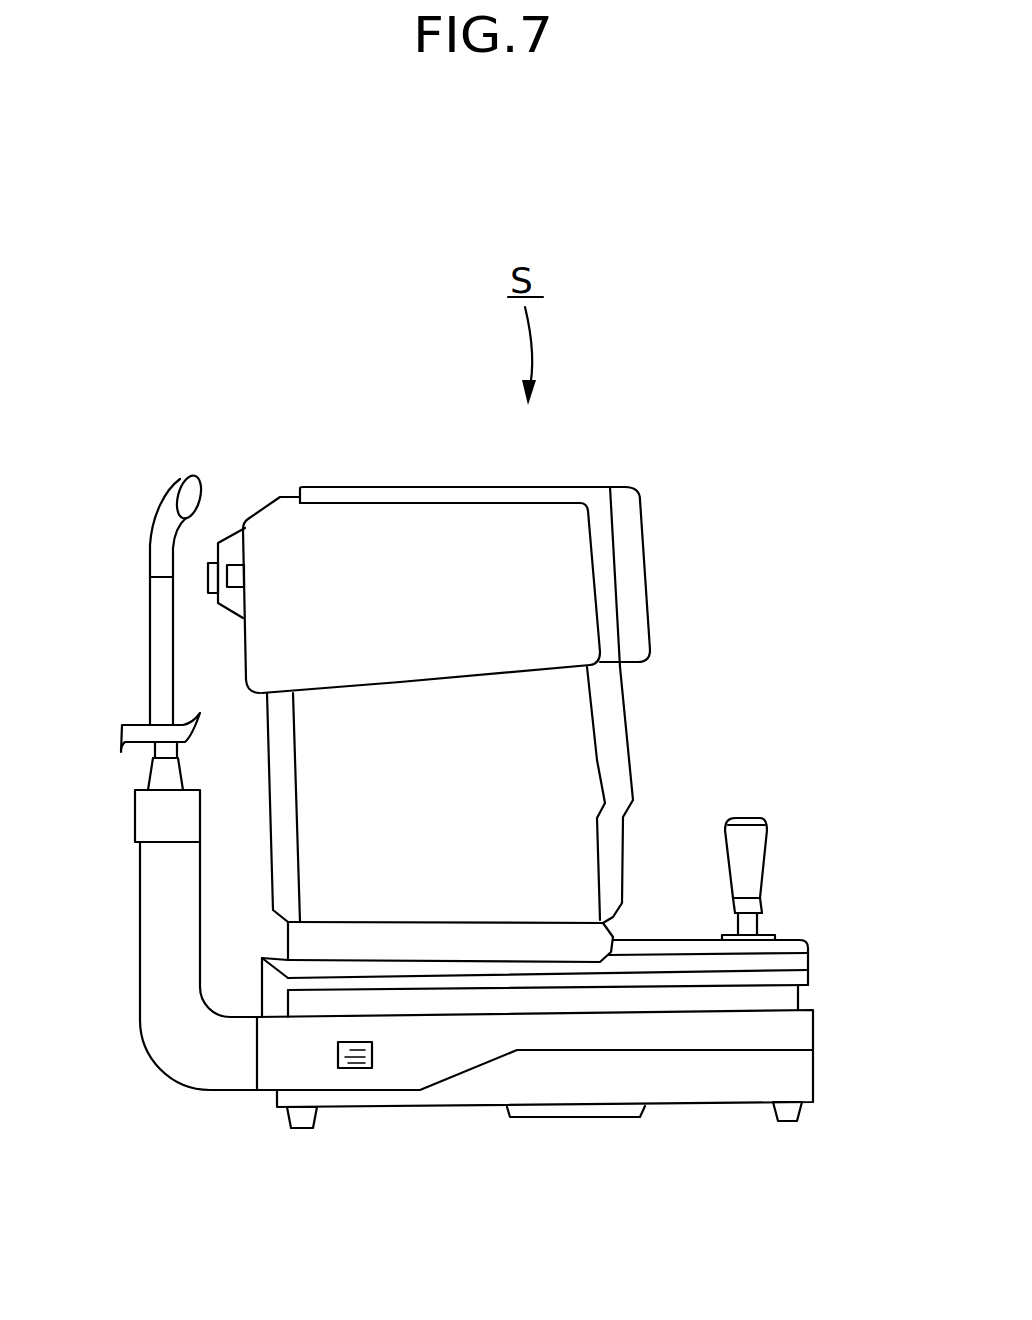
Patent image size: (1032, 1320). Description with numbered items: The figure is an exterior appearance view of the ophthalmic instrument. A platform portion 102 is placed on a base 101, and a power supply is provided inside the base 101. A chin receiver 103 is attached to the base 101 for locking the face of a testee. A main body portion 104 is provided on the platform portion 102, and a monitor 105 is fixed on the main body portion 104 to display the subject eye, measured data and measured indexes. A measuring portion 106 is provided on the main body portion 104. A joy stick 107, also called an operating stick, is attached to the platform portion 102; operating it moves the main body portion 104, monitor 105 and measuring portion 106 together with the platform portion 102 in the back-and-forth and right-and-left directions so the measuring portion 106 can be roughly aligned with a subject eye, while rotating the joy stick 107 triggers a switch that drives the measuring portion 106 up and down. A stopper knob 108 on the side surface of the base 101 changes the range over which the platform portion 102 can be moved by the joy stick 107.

The base 101 is at (787, 1028).
The platform portion 102 is at (808, 983).
The chin receiver 103 is at (163, 660).
The main body portion 104 is at (533, 807).
The monitor 105 is at (623, 730).
The measuring portion 106 is at (633, 560).
The joy stick 107 is at (752, 850).
The stopper knob 108 is at (357, 1070).